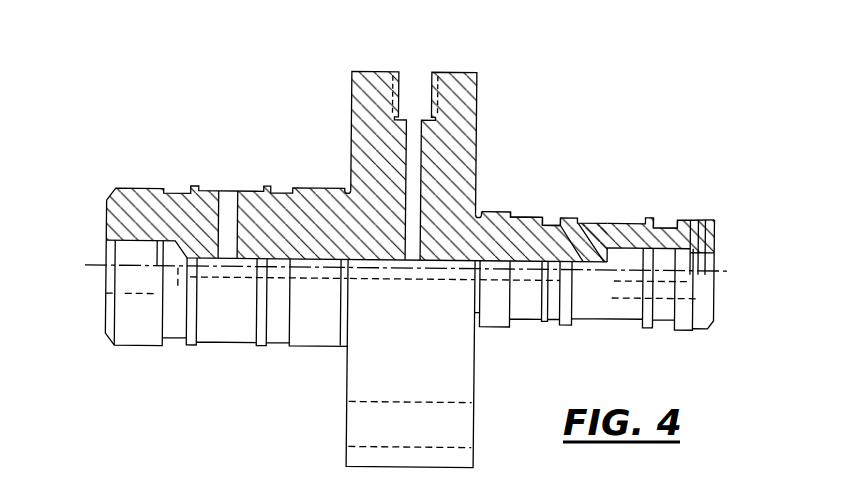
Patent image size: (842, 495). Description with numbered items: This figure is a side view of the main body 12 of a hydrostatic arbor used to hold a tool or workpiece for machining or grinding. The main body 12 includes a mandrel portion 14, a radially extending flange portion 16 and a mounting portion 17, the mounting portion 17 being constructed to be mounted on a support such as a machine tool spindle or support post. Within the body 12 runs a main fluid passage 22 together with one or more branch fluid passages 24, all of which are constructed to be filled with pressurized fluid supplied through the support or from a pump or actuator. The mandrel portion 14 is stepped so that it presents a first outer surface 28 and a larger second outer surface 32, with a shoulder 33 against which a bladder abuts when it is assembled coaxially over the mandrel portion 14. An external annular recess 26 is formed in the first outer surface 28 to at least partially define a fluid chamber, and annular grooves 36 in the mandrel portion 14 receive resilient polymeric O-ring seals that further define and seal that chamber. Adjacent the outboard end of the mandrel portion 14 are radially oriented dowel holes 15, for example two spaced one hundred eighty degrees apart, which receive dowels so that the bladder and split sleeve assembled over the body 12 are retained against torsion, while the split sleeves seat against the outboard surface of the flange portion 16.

The main body 12 is at (503, 68).
The mandrel portion 14 is at (507, 251).
The dowel holes 15 is at (703, 235).
The flange portion 16 is at (461, 171).
The mounting portion 17 is at (336, 239).
The main fluid passage 22 is at (383, 255).
The branch fluid passages 24 is at (580, 254).
The external annular recess 26 is at (613, 221).
The first outer surface 28 is at (525, 216).
The second outer surface 32 is at (485, 210).
The shoulder 33 is at (498, 213).
The annular grooves 36 is at (548, 223).